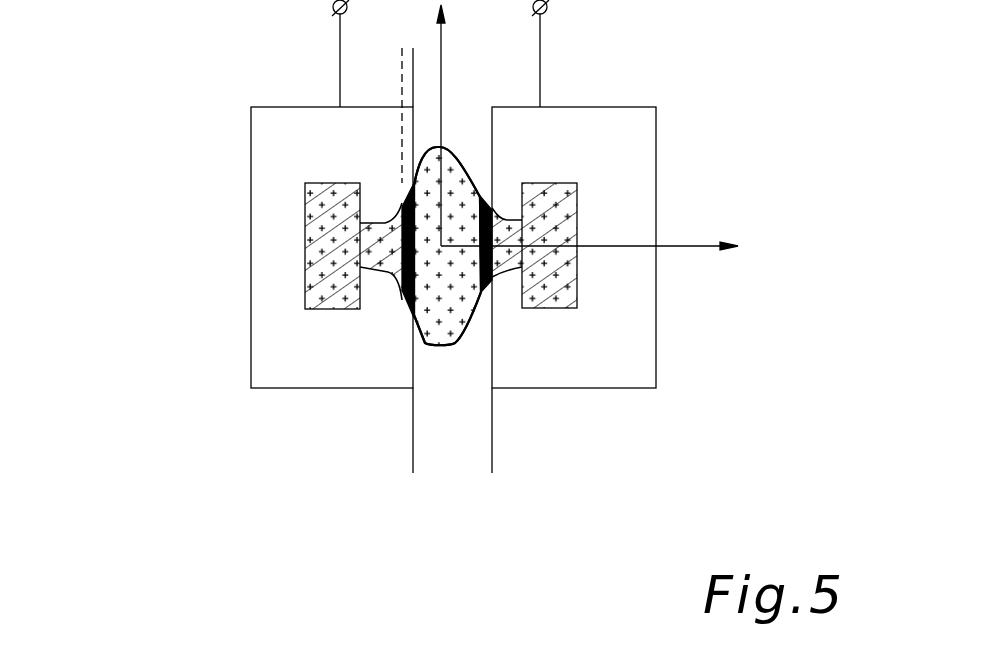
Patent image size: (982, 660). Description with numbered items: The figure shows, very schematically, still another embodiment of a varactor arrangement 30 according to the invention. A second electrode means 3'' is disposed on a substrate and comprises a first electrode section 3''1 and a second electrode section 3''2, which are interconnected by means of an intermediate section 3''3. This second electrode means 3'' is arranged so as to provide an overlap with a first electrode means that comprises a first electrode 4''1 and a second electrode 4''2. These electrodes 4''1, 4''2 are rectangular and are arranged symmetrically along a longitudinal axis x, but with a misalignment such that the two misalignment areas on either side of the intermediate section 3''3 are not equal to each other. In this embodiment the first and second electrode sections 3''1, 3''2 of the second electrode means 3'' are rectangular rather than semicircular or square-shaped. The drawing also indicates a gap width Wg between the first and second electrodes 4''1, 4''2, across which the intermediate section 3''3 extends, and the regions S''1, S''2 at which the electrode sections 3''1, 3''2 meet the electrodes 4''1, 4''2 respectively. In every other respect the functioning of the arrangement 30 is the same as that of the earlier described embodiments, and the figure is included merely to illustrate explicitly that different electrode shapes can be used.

The varactor arrangement 30 is at (405, 285).
The first electrode 4''1 is at (314, 222).
The second electrode 4''2 is at (606, 223).
The first electrode section 3''1 is at (265, 221).
The second electrode section 3''2 is at (616, 224).
The second electrode means 3'' is at (468, 194).
The intermediate section 3''3 is at (438, 348).
The first pole face S''1 is at (342, 343).
The second pole face S''2 is at (572, 346).
The gap width Wg is at (492, 468).